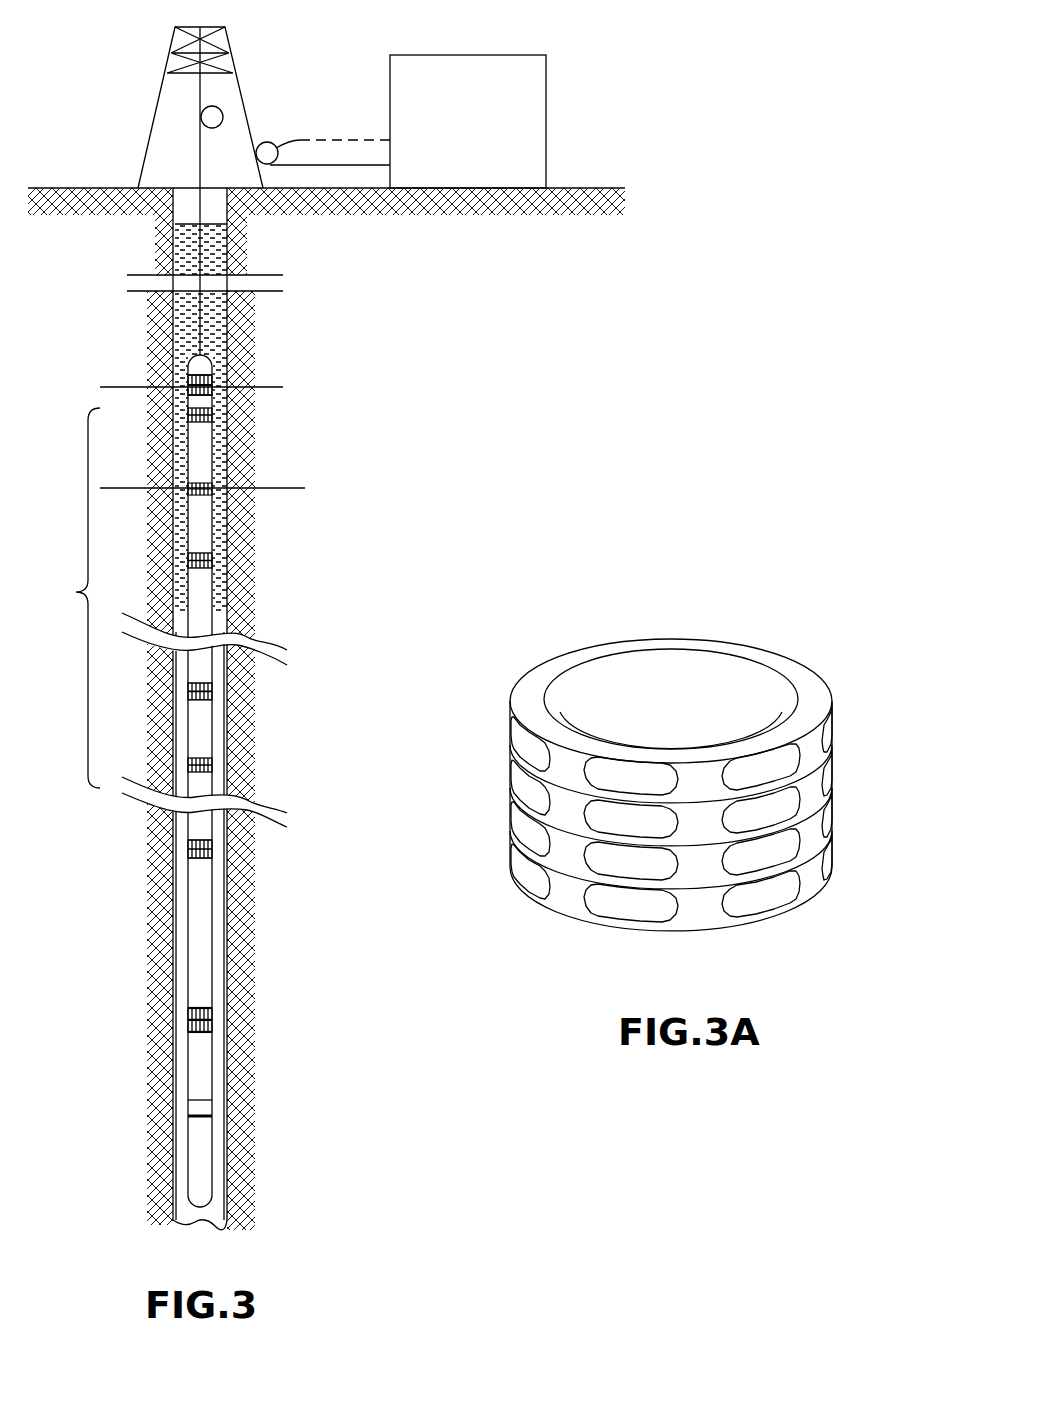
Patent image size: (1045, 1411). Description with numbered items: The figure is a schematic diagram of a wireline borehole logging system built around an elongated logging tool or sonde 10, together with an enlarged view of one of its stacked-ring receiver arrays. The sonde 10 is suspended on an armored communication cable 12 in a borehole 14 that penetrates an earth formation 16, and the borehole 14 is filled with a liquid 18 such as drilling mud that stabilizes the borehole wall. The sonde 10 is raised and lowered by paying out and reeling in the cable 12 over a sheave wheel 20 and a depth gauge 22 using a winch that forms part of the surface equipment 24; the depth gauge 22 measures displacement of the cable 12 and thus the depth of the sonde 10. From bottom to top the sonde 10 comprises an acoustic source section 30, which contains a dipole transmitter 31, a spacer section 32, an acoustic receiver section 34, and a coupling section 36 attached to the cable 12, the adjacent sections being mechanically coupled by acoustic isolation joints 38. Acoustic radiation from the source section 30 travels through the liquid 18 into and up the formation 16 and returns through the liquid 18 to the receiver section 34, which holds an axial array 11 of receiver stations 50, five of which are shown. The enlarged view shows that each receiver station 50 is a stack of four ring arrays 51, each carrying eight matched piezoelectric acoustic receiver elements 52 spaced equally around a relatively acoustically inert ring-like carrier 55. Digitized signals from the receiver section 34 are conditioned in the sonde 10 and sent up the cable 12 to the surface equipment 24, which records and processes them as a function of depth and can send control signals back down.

In FIG. 3, the sonde 10 is at (197, 1186).
In FIG. 3, the axial array 11 is at (69, 598).
In FIG. 3, the armored communication cable 12 is at (200, 143).
In FIG. 3, the borehole 14 is at (188, 212).
In FIG. 3, the earth formation 16 is at (54, 208).
In FIG. 3, the liquid 18 is at (152, 340).
In FIG. 3, the sheave wheel 20 is at (207, 113).
In FIG. 3, the depth gauge 22 is at (267, 150).
In FIG. 3, the surface equipment 24 is at (548, 98).
In FIG. 3, the acoustic source section 30 is at (197, 1080).
In FIG. 3, the transmitter 31 is at (200, 1112).
In FIG. 3, the spacer section 32 is at (195, 950).
In FIG. 3, the acoustic receiver section 34 is at (197, 786).
In FIG. 3, the coupling section 36 is at (198, 363).
In FIG. 3, the acoustic isolation joints 38 is at (212, 390).
In FIG. 3, the receiver station 50 is at (200, 553).
In FIG. 3A, the receiver station 50 is at (682, 789).
In FIG. 3A, the ring array 51 is at (807, 877).
In FIG. 3A, the acoustic receiver elements 52 is at (708, 913).
In FIG. 3A, the ring-like carrier 55 is at (531, 700).